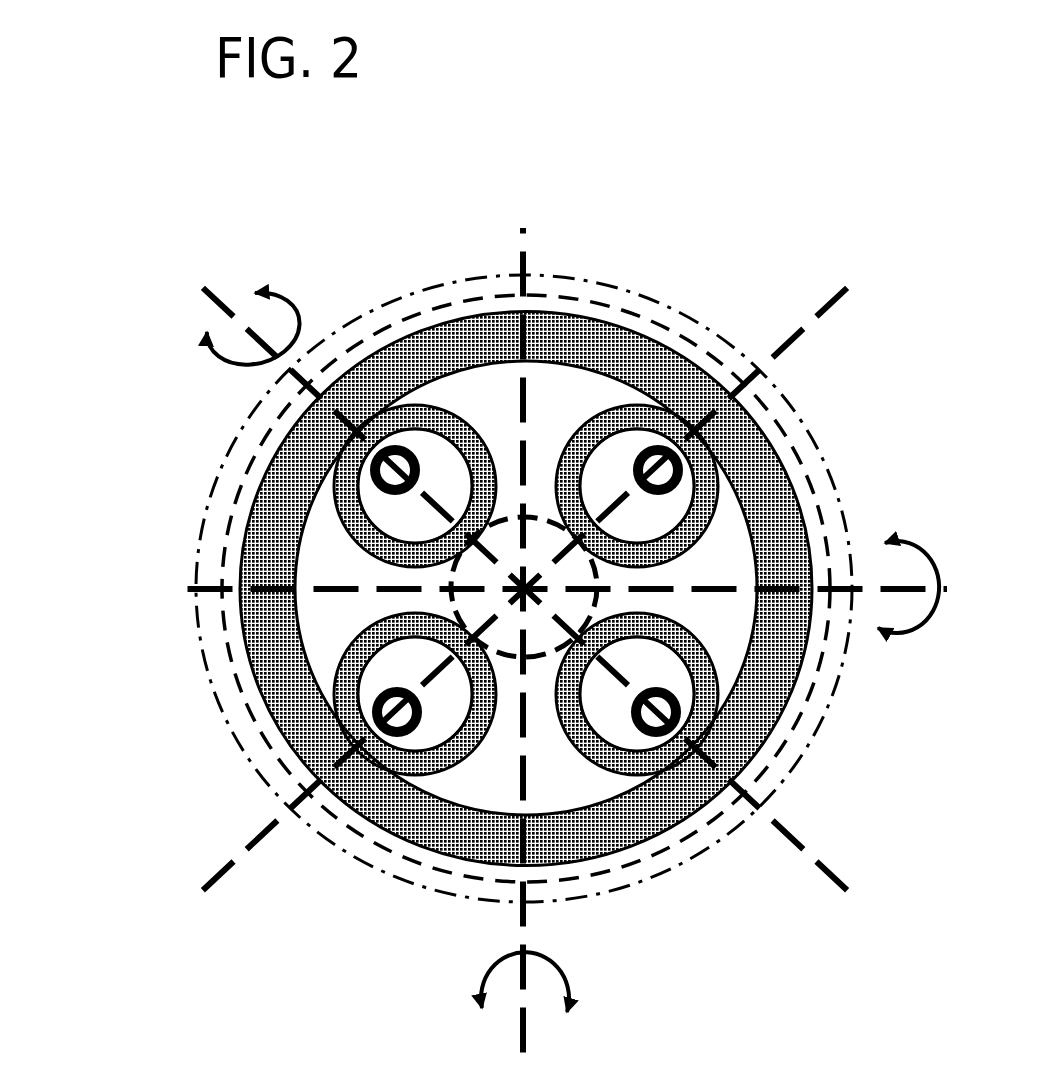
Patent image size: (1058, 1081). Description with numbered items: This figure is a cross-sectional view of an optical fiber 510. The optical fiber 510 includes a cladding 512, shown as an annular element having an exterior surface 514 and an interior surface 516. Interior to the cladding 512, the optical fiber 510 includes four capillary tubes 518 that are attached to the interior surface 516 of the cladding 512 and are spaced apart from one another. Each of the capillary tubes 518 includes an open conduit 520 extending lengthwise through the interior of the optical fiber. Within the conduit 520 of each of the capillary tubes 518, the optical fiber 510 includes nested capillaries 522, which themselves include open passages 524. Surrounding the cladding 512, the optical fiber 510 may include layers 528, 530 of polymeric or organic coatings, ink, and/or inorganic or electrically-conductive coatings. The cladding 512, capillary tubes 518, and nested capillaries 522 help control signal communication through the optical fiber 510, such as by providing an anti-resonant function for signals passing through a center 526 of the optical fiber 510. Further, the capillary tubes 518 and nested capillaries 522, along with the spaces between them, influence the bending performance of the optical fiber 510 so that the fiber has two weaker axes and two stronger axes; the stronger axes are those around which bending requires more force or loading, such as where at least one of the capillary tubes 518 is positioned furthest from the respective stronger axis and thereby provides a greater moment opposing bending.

The optical fiber 510 is at (369, 203).
The cladding 512 is at (270, 492).
The exterior surface 514 is at (235, 633).
The interior surface 516 is at (318, 648).
The capillary tubes 518 is at (705, 688).
The open conduit 520 is at (605, 480).
The nested capillaries 522 is at (690, 716).
The open passages 524 is at (398, 738).
The center 526 is at (540, 632).
The layer 528 is at (230, 547).
The layer 530 is at (247, 445).